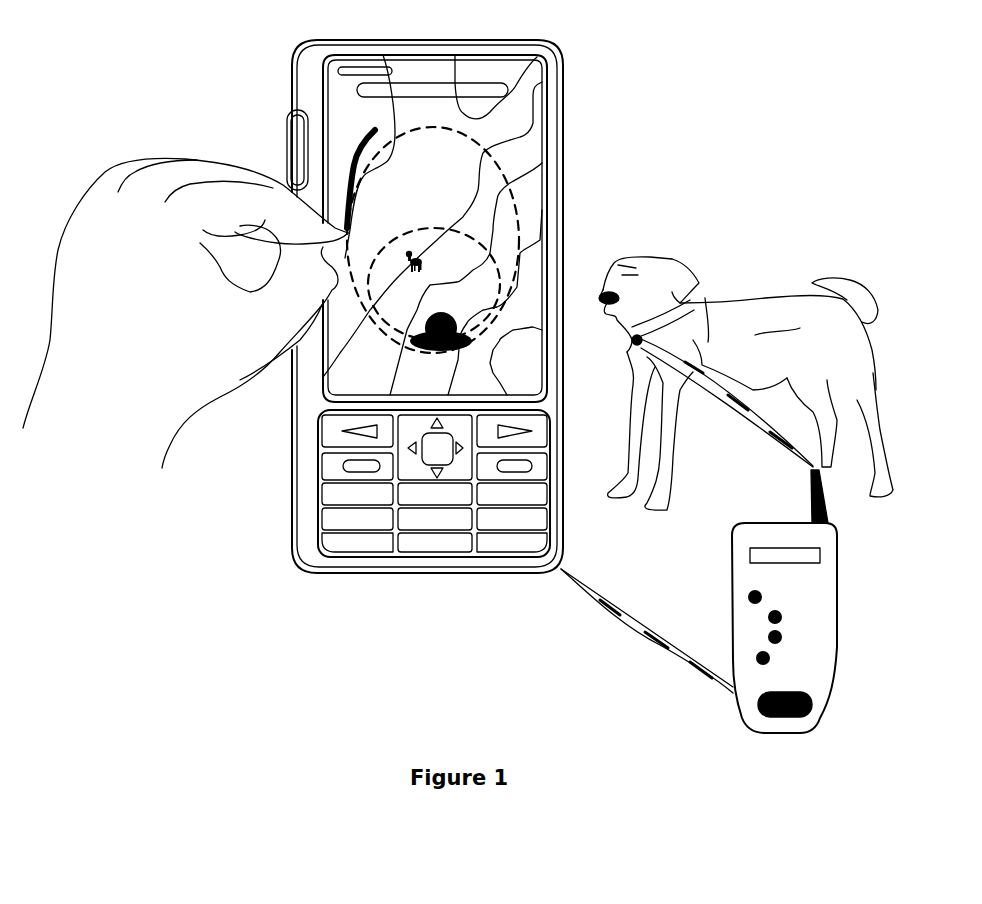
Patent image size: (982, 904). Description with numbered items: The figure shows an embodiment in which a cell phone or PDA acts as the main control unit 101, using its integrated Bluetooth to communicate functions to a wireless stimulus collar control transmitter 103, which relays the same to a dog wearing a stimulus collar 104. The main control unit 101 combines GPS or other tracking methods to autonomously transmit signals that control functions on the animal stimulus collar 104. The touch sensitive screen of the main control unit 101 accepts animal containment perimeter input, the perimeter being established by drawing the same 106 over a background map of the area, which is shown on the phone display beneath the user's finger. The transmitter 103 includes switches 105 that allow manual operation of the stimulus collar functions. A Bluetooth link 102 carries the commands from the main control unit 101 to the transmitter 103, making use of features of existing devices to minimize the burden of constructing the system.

The main control unit 101 is at (425, 293).
The Bluetooth link 102 is at (647, 631).
The remote transmitter 103 is at (807, 601).
The dog collar receiver 104 is at (636, 327).
The switches 105 is at (787, 627).
The drawing of the perimeter 106 is at (372, 185).